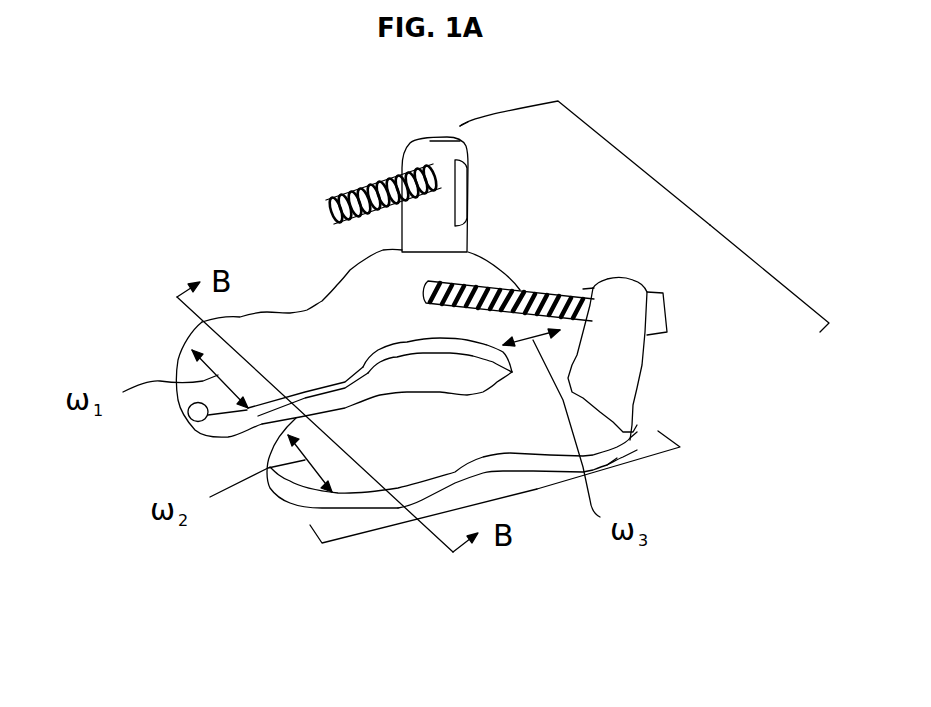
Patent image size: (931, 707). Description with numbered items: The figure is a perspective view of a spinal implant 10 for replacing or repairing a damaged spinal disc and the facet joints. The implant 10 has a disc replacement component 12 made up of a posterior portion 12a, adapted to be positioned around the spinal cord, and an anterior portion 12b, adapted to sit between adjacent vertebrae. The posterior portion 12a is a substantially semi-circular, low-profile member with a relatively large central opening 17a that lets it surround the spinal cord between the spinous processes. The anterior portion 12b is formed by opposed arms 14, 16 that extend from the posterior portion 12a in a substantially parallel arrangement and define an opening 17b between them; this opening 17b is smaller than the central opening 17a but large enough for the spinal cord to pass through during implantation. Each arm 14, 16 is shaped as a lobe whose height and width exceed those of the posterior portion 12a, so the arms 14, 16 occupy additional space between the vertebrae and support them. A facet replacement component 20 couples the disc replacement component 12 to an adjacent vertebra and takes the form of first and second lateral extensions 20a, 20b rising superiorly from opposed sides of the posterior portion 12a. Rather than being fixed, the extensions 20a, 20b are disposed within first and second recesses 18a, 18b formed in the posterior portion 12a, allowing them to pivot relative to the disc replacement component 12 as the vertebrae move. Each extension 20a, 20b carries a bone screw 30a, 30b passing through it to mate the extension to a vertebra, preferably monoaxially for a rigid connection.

The spinal implant 10 is at (136, 145).
The disc replacement component 12 is at (465, 438).
The posterior portion 12a is at (633, 475).
The anterior portion 12b is at (523, 494).
The arm 14 is at (177, 362).
The arm 16 is at (298, 507).
The central opening 17a is at (440, 380).
The opening 17b is at (258, 428).
The first recess 18a is at (474, 242).
The second recess 18b is at (633, 407).
The facet replacement component 20 is at (717, 226).
The first lateral extension 20a is at (497, 193).
The second lateral extension 20b is at (672, 362).
The bone screw 30a is at (360, 183).
The bone screw 30b is at (667, 317).